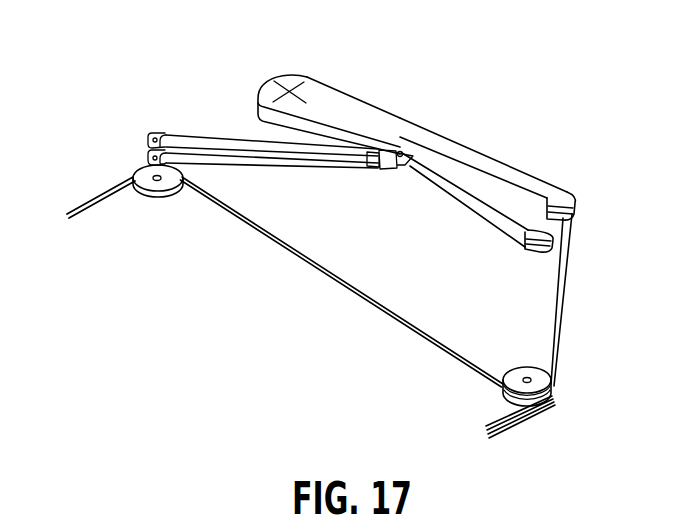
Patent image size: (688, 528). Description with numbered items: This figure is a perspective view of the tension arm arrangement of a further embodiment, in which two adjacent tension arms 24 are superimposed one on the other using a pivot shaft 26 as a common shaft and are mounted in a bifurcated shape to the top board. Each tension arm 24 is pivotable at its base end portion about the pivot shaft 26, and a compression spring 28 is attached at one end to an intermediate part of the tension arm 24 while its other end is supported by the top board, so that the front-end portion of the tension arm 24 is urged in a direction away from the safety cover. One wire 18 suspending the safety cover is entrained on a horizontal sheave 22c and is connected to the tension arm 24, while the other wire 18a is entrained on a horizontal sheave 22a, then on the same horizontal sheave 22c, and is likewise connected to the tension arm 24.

The wire 18 is at (553, 287).
The wire 18a is at (107, 198).
The horizontal sheave 22a is at (167, 184).
The horizontal sheave 22c is at (513, 377).
The tension arm 24 is at (468, 157).
The pivot shaft 26 is at (292, 82).
The compression spring 28 is at (218, 136).